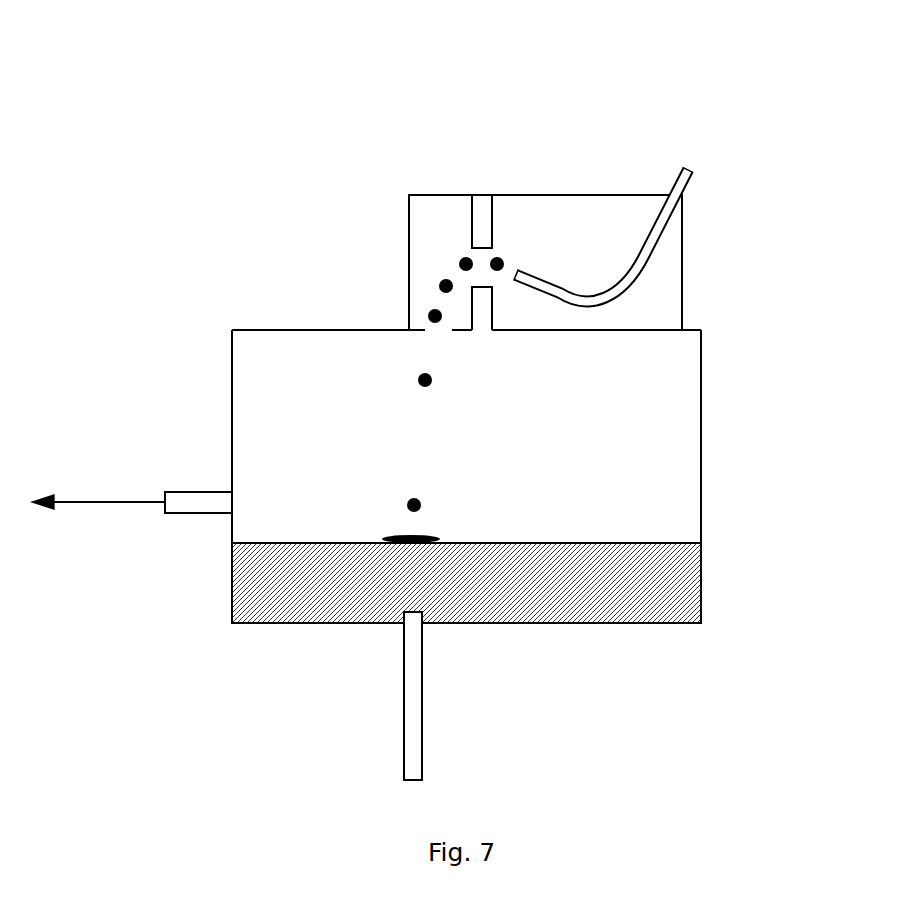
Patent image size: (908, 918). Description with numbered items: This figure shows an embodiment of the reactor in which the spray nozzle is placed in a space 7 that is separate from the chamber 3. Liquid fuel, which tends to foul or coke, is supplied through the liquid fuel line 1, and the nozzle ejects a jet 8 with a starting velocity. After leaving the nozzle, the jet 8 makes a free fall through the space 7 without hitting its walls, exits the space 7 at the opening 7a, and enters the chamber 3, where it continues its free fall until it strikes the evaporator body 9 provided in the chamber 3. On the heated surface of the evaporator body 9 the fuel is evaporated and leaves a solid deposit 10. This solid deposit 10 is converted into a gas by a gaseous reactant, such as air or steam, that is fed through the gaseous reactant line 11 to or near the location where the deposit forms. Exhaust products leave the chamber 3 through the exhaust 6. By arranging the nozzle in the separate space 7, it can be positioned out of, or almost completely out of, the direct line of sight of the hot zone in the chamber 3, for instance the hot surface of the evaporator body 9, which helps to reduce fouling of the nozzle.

The liquid fuel line 1 is at (689, 186).
The chamber 3 is at (702, 520).
The exhaust 6 is at (190, 490).
The space 7 is at (440, 227).
The opening 7a is at (422, 327).
The jet 8 is at (438, 282).
The evaporator body 9 is at (315, 588).
The solid deposit 10 is at (392, 533).
The gaseous reactant line 11 is at (423, 663).